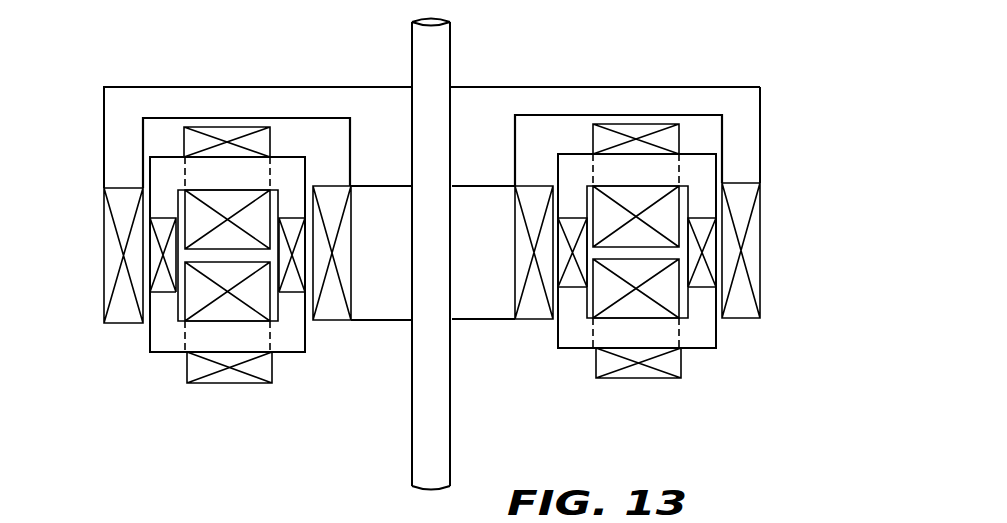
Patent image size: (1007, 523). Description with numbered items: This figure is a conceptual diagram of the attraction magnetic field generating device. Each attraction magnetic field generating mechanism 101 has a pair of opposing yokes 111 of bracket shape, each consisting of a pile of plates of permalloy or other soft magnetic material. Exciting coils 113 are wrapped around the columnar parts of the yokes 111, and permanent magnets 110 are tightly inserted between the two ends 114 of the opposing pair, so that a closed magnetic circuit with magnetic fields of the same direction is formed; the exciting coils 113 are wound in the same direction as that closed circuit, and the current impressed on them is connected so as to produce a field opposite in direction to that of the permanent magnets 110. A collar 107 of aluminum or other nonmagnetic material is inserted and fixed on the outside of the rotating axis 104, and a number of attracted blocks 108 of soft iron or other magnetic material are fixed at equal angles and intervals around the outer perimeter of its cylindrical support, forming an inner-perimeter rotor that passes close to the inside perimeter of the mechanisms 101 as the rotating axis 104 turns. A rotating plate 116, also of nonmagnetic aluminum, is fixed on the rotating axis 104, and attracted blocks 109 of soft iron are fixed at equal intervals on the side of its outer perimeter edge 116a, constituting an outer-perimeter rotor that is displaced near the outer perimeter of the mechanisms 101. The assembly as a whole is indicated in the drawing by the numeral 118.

The attraction magnetic field generating mechanism 101 is at (140, 338).
The rotating axis 104 is at (427, 436).
The collar 107 is at (373, 298).
The attracted block 108 is at (330, 300).
The attracted block 109 is at (108, 283).
The permanent magnet 110 is at (142, 256).
The yoke 111 is at (225, 168).
The exciting coil 113 is at (192, 145).
The end 114 is at (290, 287).
The rotating plate 116 is at (515, 93).
The outer perimeter edge 116a is at (742, 165).
The motor assembly 118 is at (556, 76).